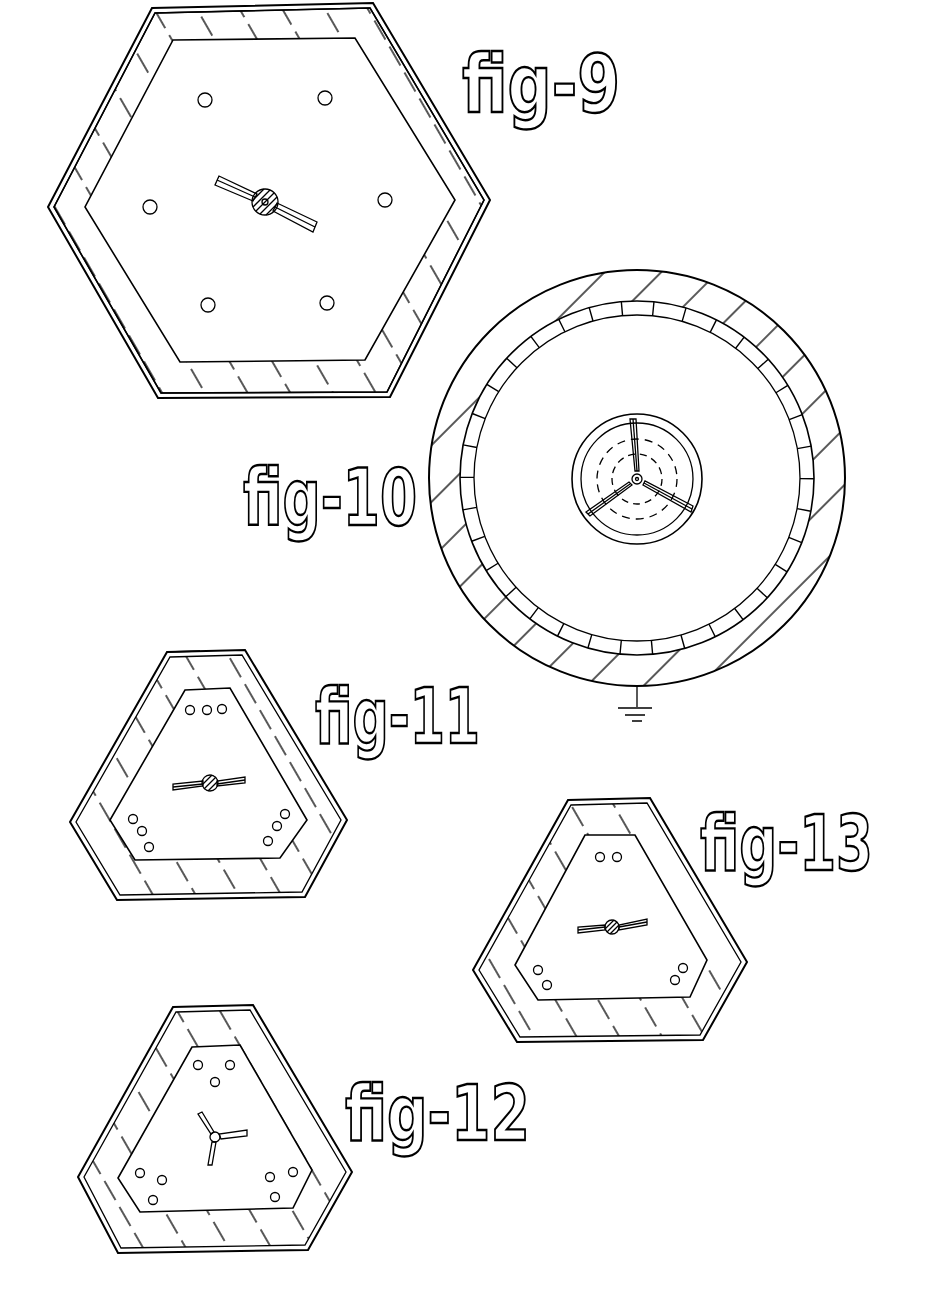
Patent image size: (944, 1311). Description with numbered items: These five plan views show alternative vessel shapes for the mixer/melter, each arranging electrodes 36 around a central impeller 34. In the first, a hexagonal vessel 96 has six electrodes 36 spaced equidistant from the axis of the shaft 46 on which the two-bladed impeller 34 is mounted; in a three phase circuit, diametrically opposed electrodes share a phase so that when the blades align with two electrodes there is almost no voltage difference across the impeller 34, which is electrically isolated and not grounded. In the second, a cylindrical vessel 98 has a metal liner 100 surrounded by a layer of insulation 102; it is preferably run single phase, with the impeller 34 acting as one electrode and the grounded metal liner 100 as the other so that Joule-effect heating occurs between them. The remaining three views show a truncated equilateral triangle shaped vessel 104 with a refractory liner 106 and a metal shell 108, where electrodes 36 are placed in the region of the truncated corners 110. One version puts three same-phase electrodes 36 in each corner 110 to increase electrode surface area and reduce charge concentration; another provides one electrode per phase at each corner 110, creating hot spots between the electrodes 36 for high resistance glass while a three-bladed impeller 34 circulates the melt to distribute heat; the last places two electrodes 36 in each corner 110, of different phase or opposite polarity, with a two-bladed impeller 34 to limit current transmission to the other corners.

In FIG. 9, the impeller 34 is at (297, 197).
In FIG. 10, the impeller 34 is at (640, 442).
In FIG. 11, the impeller 34 is at (220, 787).
In FIG. 13, the impeller 34 is at (583, 937).
In FIG. 12, the impeller 34 is at (203, 1127).
In FIG. 9, the electrodes 36 is at (319, 94).
In FIG. 11, the electrodes 36 is at (188, 716).
In FIG. 13, the electrodes 36 is at (600, 862).
In FIG. 12, the electrodes 36 is at (203, 1066).
In FIG. 9, the shaft 46 is at (268, 215).
In FIG. 9, the hexagonal vessel 96 is at (407, 55).
In FIG. 10, the cylindrical vessel 98 is at (644, 281).
In FIG. 10, the metal liner 100 is at (568, 313).
In FIG. 10, the layer of insulation 102 is at (695, 666).
In FIG. 11, the truncated equilateral triangle shaped vessel 104 is at (273, 697).
In FIG. 13, the truncated equilateral triangle shaped vessel 104 is at (670, 832).
In FIG. 12, the truncated equilateral triangle shaped vessel 104 is at (263, 1033).
In FIG. 11, the refractory liner 106 is at (190, 672).
In FIG. 13, the refractory liner 106 is at (625, 1013).
In FIG. 12, the refractory liner 106 is at (257, 1227).
In FIG. 11, the metal shell 108 is at (168, 652).
In FIG. 11, the truncated corners 110 is at (240, 653).
In FIG. 13, the truncated corners 110 is at (602, 800).
In FIG. 12, the truncated corners 110 is at (205, 1018).